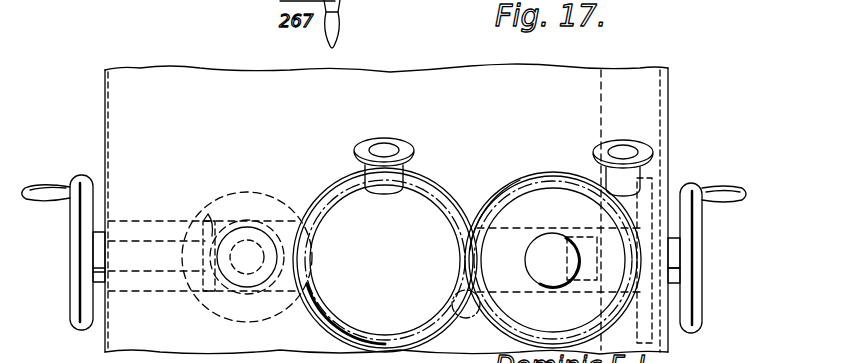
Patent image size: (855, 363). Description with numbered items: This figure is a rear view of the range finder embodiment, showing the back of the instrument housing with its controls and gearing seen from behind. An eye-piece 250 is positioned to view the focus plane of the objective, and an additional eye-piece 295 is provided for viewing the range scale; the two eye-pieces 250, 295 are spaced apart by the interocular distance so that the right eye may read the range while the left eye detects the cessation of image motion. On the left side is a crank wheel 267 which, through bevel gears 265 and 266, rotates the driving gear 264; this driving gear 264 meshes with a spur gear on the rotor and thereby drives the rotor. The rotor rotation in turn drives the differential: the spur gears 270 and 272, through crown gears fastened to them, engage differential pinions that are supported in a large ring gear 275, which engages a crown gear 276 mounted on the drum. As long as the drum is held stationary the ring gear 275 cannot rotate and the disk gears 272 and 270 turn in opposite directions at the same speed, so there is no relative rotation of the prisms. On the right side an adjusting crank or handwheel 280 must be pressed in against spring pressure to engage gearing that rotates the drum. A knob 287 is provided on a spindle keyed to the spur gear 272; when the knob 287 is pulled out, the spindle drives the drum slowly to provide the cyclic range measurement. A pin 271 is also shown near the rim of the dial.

The eye-piece 250 is at (388, 146).
The driving gear 264 is at (254, 184).
The bevel gear 265 is at (266, 221).
The bevel gear 266 is at (210, 222).
The crank wheel 267 is at (76, 246).
The spur gear 270 is at (494, 181).
The pin 271 is at (462, 318).
The spur gear 272 is at (543, 182).
The ring gear 275 is at (515, 177).
The crown gear 276 is at (642, 343).
The adjusting crank or handwheel 280 is at (696, 188).
The knob 287 is at (547, 240).
The additional eye-piece 295 is at (624, 150).